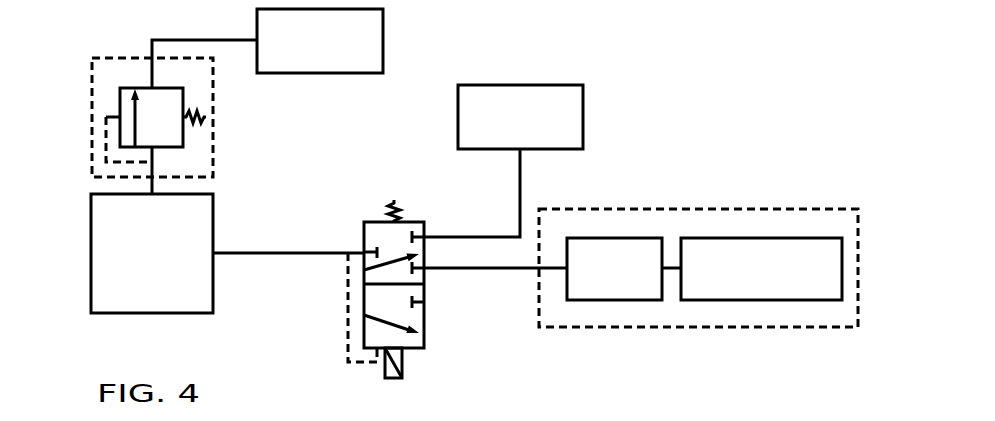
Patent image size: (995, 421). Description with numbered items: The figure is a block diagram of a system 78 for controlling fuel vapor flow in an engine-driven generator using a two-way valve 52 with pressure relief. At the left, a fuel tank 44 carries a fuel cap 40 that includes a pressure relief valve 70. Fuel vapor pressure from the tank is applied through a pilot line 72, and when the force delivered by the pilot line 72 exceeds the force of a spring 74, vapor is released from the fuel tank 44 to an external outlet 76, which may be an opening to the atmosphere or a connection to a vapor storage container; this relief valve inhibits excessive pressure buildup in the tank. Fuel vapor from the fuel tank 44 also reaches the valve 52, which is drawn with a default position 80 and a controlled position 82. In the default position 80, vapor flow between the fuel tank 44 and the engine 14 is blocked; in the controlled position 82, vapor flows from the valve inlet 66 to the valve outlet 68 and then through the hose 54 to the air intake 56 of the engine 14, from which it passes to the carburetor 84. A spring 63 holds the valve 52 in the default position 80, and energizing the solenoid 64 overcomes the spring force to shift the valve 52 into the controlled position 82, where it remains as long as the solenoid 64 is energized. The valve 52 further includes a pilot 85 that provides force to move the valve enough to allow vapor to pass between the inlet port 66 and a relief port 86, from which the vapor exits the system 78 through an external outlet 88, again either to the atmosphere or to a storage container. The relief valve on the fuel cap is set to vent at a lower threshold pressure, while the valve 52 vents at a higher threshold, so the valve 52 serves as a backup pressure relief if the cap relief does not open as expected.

The engine 14 is at (700, 209).
The fuel cap 40 is at (120, 58).
The fuel tank 44 is at (91, 251).
The two-way valve 52 is at (411, 164).
The hose 54 is at (500, 272).
The air intake 56 is at (617, 300).
The spring 63 is at (395, 200).
The solenoid 64 is at (385, 364).
The valve inlet 66 is at (364, 252).
The valve outlet 68 is at (428, 270).
The pressure relief valve 70 is at (120, 98).
The pilot line 72 is at (106, 140).
The spring 74 is at (206, 117).
The external outlet 76 is at (383, 43).
The system 78 is at (635, 37).
The default position 80 is at (377, 222).
The controlled position 82 is at (364, 301).
The carburetor 84 is at (765, 300).
The pilot 85 is at (348, 328).
The relief port 86 is at (428, 237).
The external outlet 88 is at (583, 120).